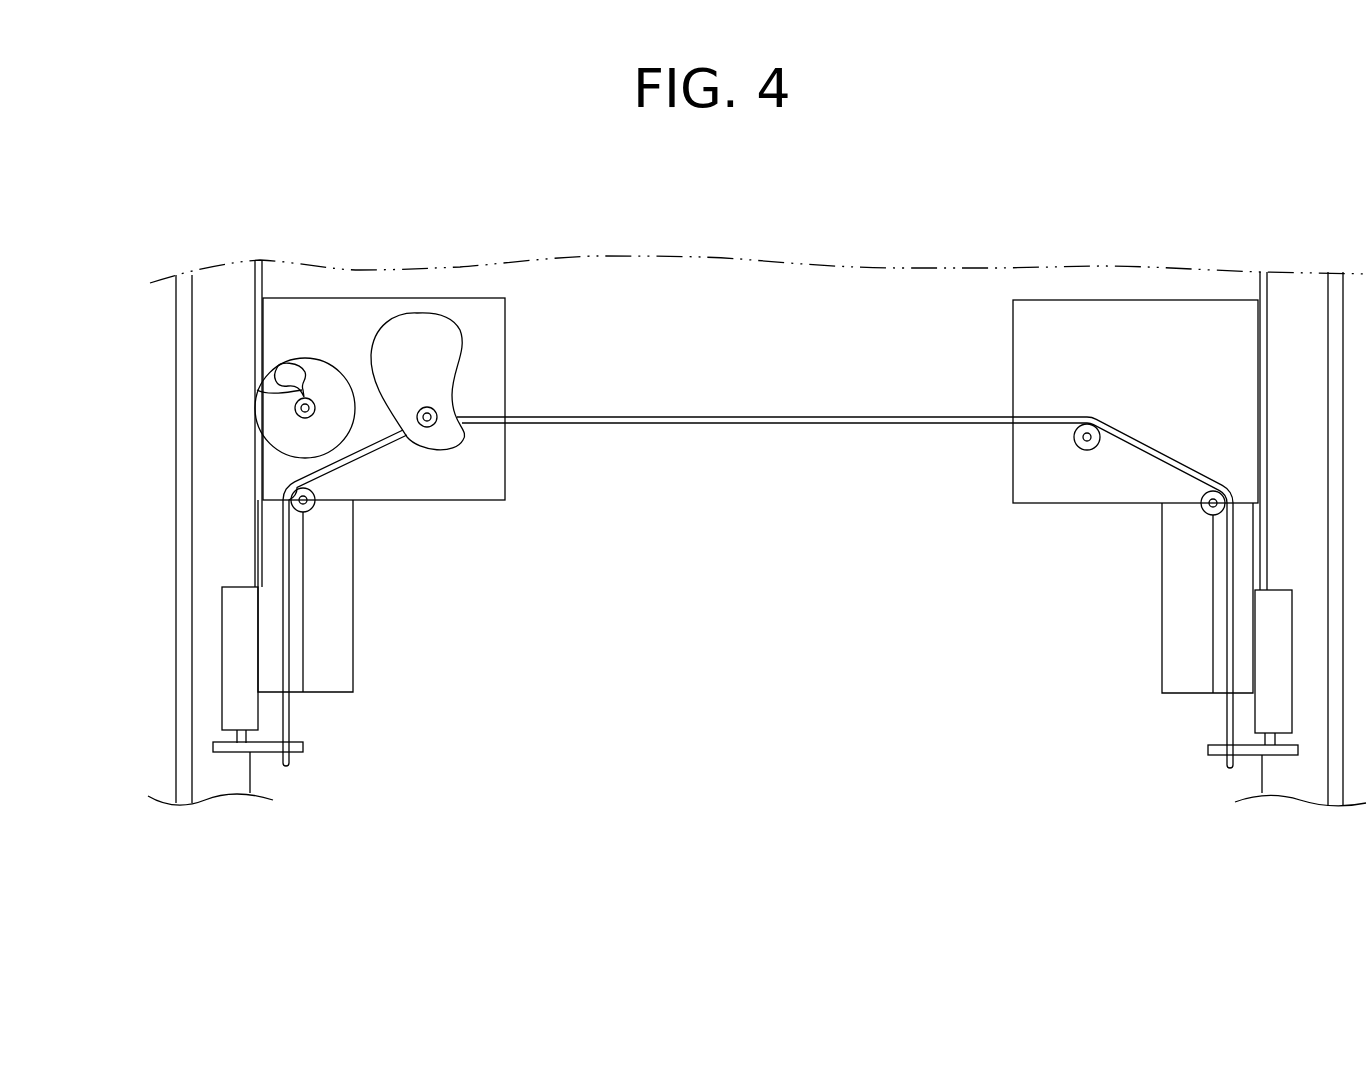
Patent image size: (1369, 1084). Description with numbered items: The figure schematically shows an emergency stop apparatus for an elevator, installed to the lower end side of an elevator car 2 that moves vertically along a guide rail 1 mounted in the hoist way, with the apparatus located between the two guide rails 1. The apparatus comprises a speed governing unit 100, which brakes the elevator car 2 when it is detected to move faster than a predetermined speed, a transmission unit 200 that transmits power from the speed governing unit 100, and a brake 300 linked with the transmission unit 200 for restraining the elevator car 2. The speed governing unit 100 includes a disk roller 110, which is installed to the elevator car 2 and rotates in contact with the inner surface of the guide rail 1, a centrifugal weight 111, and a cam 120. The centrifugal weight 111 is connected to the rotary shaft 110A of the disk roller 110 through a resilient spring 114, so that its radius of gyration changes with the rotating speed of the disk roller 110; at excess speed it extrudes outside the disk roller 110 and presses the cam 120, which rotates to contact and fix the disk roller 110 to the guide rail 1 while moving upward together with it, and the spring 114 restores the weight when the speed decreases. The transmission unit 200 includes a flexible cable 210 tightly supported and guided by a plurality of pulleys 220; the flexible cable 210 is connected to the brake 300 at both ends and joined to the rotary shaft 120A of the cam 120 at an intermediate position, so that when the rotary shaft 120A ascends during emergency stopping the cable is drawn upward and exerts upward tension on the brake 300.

The guide rail 1 is at (205, 340).
The elevator car 2 is at (675, 257).
The speed governing unit 100 is at (525, 310).
The disk roller 110 is at (338, 405).
The rotary shaft of the disk roller 110A is at (296, 408).
The centrifugal weight 111 is at (288, 372).
The spring 114 is at (257, 390).
The cam 120 is at (419, 312).
The rotary shaft of the cam 120A is at (430, 419).
The transmission unit 200 is at (640, 405).
The flexible cable 210 is at (740, 423).
The pulleys 220 is at (315, 501).
The brake 300 is at (210, 630).